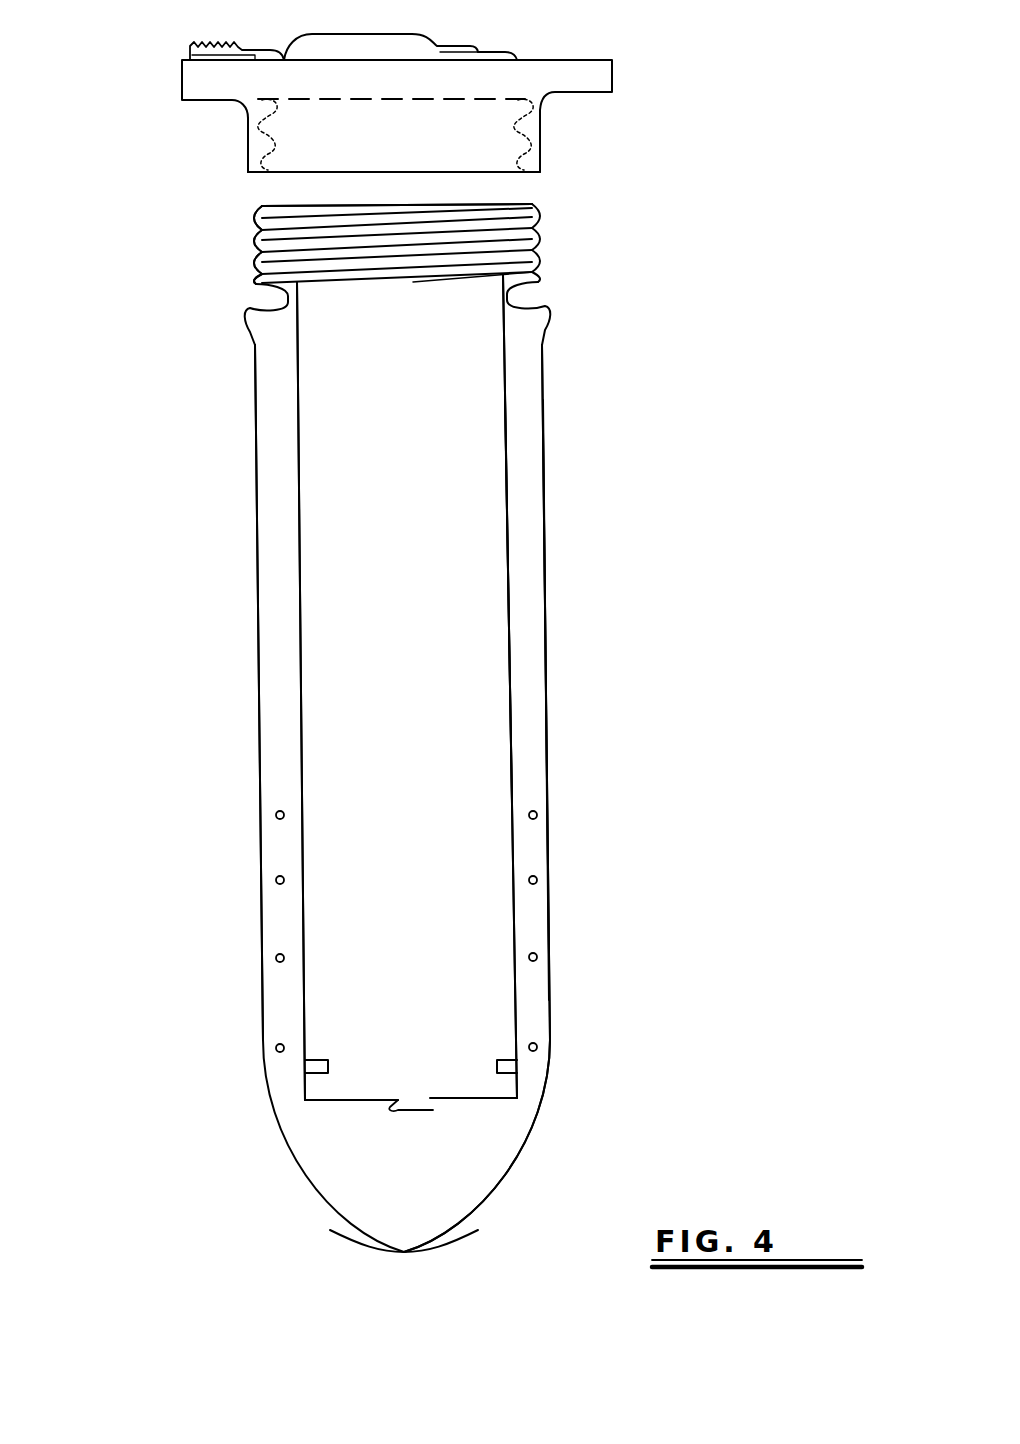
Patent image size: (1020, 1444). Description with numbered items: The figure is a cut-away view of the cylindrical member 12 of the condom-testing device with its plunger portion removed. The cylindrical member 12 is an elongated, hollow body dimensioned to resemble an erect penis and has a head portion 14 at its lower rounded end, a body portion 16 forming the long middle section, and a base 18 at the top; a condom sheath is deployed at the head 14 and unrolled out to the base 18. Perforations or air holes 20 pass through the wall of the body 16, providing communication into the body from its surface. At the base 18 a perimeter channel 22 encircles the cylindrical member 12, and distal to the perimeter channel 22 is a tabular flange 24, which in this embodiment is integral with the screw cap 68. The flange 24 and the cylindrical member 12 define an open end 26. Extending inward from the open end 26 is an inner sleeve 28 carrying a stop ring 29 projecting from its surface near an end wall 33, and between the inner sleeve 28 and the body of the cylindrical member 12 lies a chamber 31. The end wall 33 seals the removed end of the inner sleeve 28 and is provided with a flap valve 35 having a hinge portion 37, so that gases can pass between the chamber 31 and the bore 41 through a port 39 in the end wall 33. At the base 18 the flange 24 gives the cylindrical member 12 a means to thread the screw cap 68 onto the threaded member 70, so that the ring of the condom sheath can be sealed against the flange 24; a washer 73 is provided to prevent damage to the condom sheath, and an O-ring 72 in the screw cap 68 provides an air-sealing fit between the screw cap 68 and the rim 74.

The cylindrical member 12 is at (672, 633).
The head portion 14 is at (404, 1235).
The body portion 16 is at (547, 712).
The base 18 is at (213, 236).
The perforations or air holes 20 is at (537, 880).
The perimeter channel 22 is at (527, 293).
The tabular flange 24 is at (198, 84).
The open end 26 is at (470, 207).
The inner sleeve 28 is at (508, 564).
The stop ring 29 is at (505, 1067).
The chamber 31 is at (532, 780).
The end wall 33 is at (327, 1102).
The flap valve 35 is at (415, 1113).
The hinge portion 37 is at (392, 1110).
The port 39 is at (422, 1095).
The bore 41 is at (405, 902).
The screw cap 68 is at (238, 138).
The threaded member 70 is at (256, 262).
The O-ring 72 is at (518, 98).
The washer 73 is at (545, 170).
The rim 74 is at (265, 207).